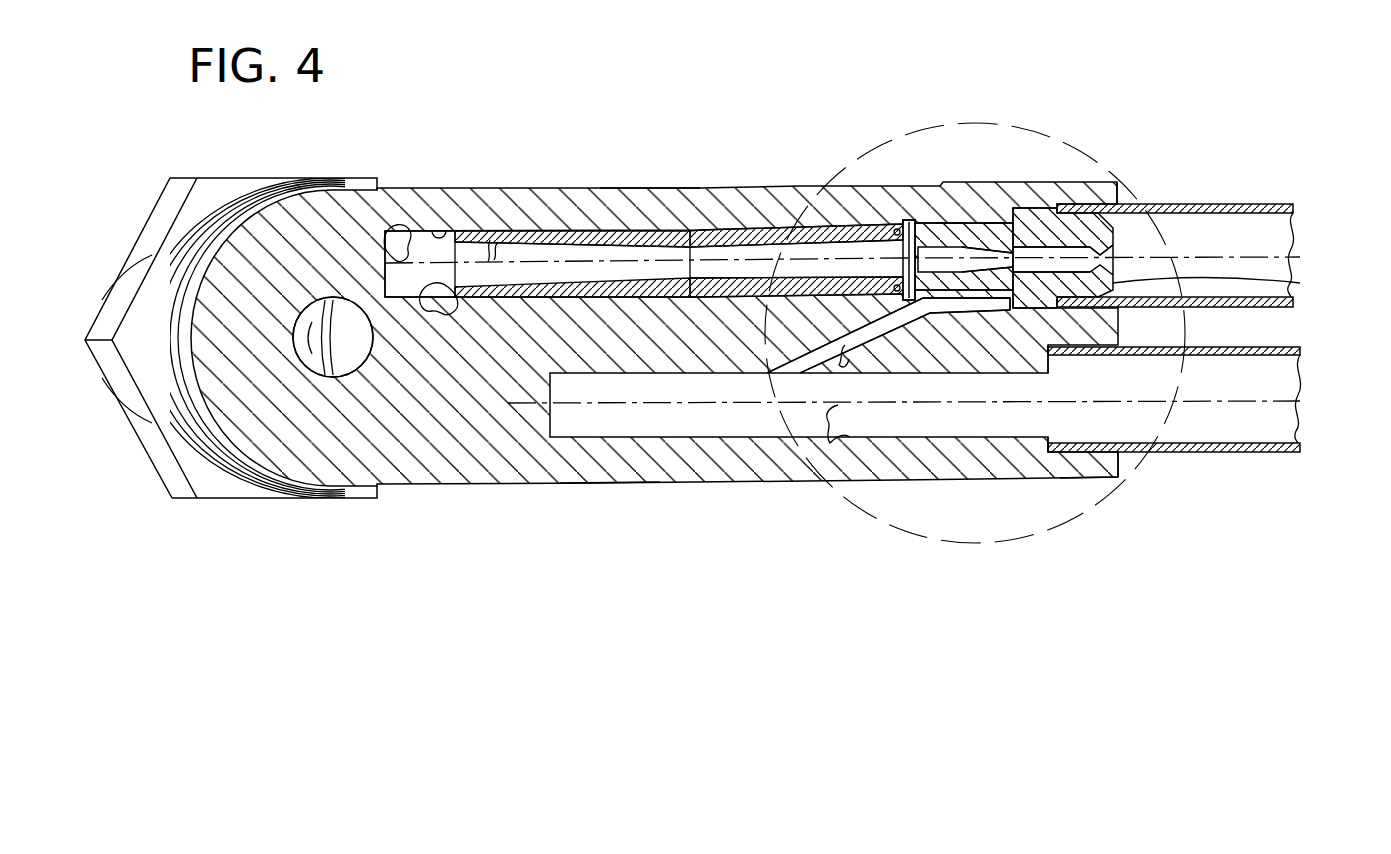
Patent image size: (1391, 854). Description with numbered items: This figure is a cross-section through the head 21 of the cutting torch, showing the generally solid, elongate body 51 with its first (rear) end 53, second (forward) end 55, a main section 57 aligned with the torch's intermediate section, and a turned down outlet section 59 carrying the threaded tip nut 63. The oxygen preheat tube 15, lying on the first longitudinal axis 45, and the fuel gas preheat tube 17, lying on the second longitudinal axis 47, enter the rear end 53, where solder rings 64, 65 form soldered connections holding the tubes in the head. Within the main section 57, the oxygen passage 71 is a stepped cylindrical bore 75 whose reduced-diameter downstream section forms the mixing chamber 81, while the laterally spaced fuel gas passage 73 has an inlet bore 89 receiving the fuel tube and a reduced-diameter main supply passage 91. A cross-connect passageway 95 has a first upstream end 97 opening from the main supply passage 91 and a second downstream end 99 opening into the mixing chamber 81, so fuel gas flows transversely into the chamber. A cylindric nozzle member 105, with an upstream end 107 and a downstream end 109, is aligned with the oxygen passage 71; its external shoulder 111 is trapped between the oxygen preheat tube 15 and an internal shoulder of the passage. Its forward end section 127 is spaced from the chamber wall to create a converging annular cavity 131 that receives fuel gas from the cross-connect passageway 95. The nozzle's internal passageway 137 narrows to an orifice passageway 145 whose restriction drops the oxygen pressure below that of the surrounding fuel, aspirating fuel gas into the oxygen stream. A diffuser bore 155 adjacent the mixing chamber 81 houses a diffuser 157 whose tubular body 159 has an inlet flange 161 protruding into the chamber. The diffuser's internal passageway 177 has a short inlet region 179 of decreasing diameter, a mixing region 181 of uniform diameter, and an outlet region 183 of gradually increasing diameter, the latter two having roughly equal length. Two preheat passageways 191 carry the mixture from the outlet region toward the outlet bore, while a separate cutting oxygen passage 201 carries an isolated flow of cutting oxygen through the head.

The oxygen preheat tube 15 is at (1233, 204).
The fuel gas preheat tube 17 is at (1240, 455).
The head 21 is at (718, 187).
The first longitudinal axis 45 is at (1298, 262).
The second longitudinal axis 47 is at (1305, 430).
The elongate body 51 is at (453, 477).
The first (rear) end 53 is at (1120, 470).
The second (forward) end 55 is at (187, 340).
The main section 57 is at (605, 460).
The outlet section 59 is at (223, 377).
The tip nut 63 is at (178, 186).
The solder ring 64 is at (1120, 308).
The solder ring 65 is at (1125, 458).
The oxygen passage 71 is at (1120, 230).
The fuel gas passage 73 is at (1062, 445).
The stepped cylindrical bore 75 is at (1125, 195).
The mixing chamber 81 is at (1018, 223).
The inlet bore 89 is at (1095, 460).
The main supply passage 91 is at (830, 437).
The cross-connect passageway 95 is at (830, 372).
The first upstream end 97 is at (752, 375).
The second downstream end 99 is at (945, 305).
The nozzle member 105 is at (1075, 355).
The upstream end 107 is at (1113, 283).
The downstream end 109 is at (910, 218).
The external shoulder 111 is at (1040, 208).
The forward end section 127 is at (935, 248).
The annular cavity 131 is at (992, 217).
The internal passageway 137 is at (1088, 212).
The orifice passageway 145 is at (947, 225).
The diffuser bore 155 is at (448, 232).
The diffuser 157 is at (603, 187).
The tubular body 159 is at (493, 298).
The inlet flange 161 is at (898, 228).
The internal passageway 177 is at (781, 243).
The inlet region 179 is at (877, 222).
The mixing region 181 is at (687, 250).
The outlet region 183 is at (527, 233).
The preheat passageways 191 is at (420, 232).
The cutting oxygen passage 201 is at (330, 337).